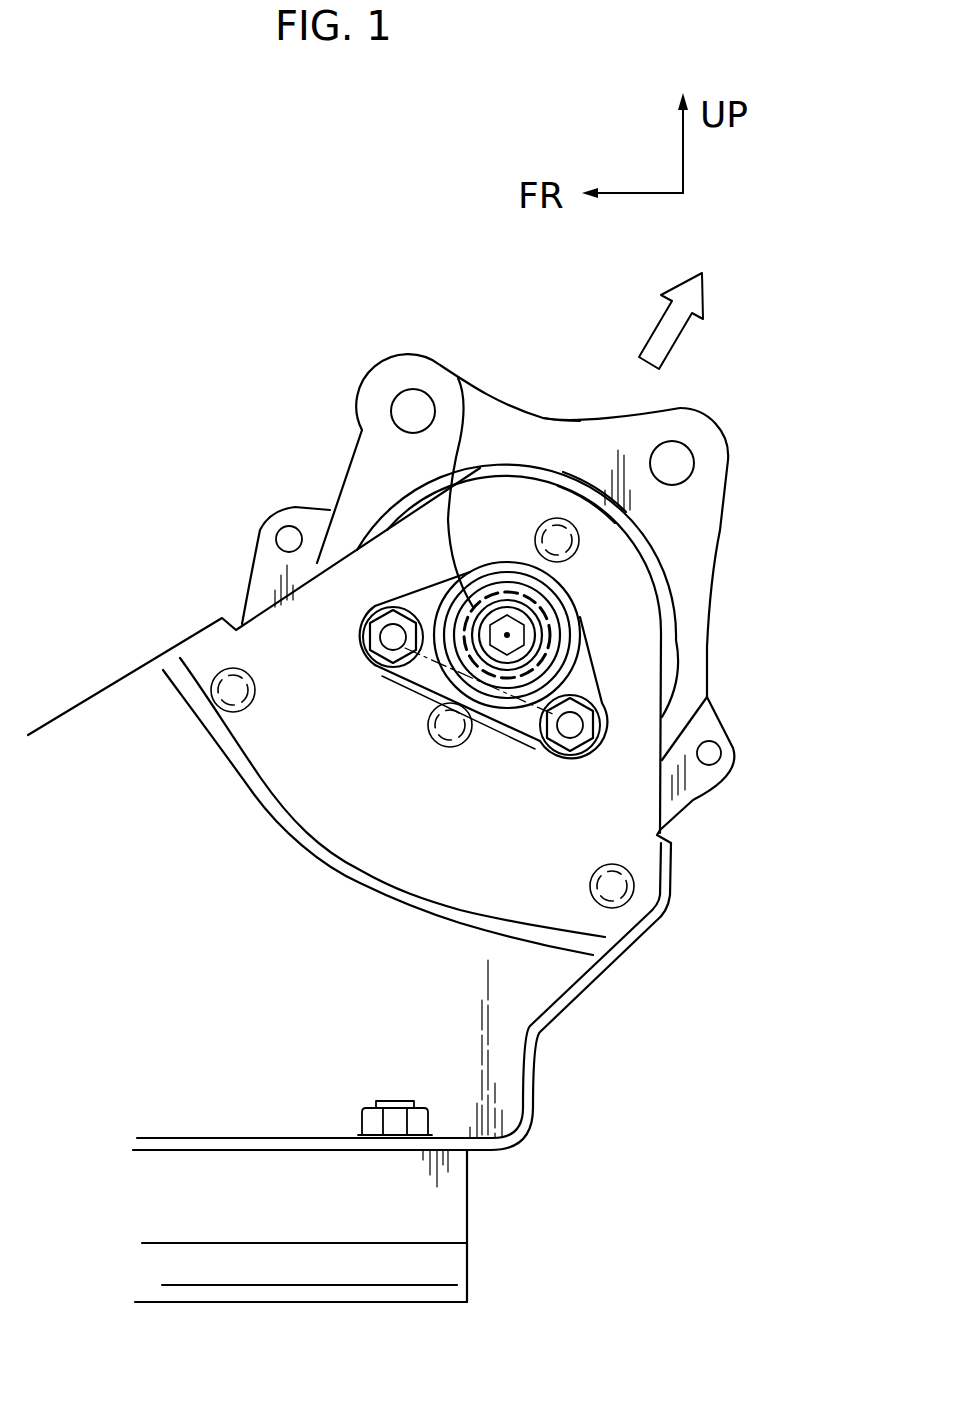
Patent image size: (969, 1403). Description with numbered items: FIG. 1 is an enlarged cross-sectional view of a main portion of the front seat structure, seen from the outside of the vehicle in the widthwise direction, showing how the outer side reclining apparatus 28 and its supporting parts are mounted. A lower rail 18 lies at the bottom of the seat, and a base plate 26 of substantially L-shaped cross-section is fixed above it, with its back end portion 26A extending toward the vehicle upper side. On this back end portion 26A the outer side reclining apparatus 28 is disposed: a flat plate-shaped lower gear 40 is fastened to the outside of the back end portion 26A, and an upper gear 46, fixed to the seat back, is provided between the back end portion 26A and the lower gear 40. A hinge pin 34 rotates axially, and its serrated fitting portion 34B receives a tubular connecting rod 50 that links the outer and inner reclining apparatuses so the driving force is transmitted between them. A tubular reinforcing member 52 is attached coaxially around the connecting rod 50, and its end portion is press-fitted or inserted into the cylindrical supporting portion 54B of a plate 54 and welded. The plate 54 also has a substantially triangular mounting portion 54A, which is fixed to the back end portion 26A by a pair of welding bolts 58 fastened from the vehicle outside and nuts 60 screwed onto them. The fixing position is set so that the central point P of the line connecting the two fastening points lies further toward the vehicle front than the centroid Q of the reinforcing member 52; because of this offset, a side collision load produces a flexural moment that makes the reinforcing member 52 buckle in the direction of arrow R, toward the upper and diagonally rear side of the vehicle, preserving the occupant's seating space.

The lower rail 18 is at (455, 1215).
The base plate 26 is at (62, 710).
The back end portion 26A is at (655, 658).
The outer side reclining apparatus 28 is at (484, 581).
The hinge pin 34 is at (460, 691).
The fitting portion 34B is at (462, 667).
The lower gear 40 is at (697, 798).
The upper gear 46 is at (537, 418).
The connecting rod 50 is at (458, 378).
The reinforcing member 52 is at (693, 712).
The plate 54 is at (417, 587).
The mounting portion 54A is at (575, 646).
The supporting portion 54B is at (600, 583).
The welding bolt 58 is at (395, 637).
The nut 60 is at (378, 668).
The central point P is at (466, 672).
The centroid Q is at (507, 635).
The arrow R is at (680, 335).